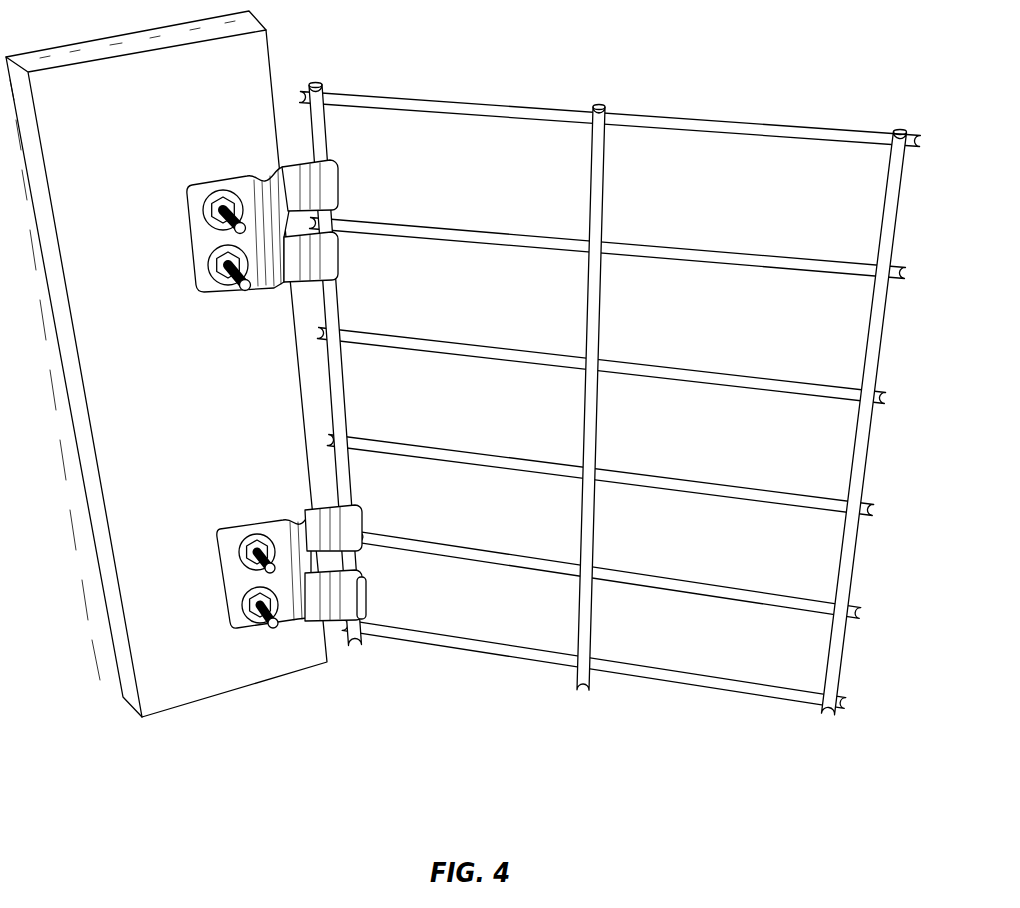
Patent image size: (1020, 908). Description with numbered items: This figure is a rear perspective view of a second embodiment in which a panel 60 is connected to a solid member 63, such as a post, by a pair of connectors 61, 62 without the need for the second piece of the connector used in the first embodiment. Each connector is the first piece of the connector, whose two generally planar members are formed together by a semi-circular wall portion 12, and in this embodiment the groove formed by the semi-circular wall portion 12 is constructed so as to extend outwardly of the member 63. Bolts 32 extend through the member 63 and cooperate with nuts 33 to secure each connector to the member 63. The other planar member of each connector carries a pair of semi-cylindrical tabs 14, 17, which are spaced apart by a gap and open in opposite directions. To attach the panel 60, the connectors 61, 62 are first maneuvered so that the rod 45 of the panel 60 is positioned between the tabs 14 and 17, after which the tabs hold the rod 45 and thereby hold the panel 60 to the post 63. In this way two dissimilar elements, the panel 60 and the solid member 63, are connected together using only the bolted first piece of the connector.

The semi-circular wall portion 12 is at (272, 177).
The tab 14 is at (362, 522).
The tab 17 is at (366, 592).
The bolt 32 is at (248, 563).
The nut 33 is at (237, 542).
The rod 45 is at (345, 400).
The panel 60 is at (705, 716).
The connector 61 is at (221, 178).
The connector 62 is at (230, 593).
The solid member 63 is at (182, 384).